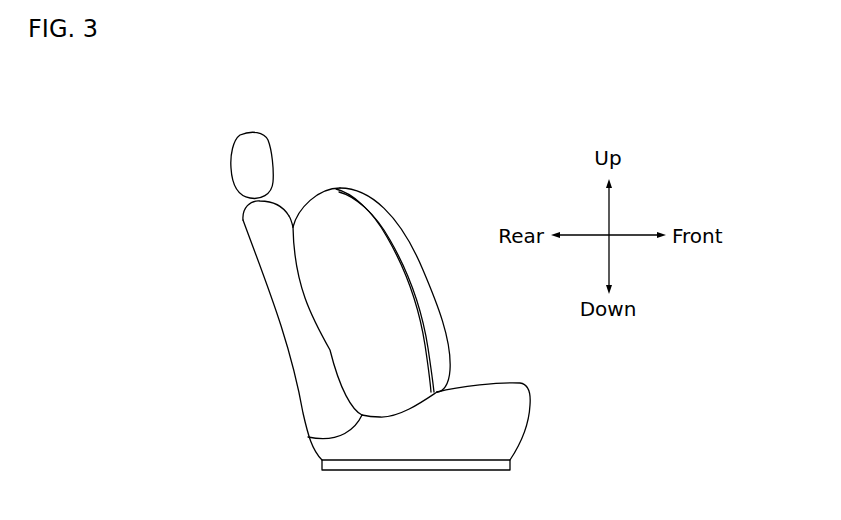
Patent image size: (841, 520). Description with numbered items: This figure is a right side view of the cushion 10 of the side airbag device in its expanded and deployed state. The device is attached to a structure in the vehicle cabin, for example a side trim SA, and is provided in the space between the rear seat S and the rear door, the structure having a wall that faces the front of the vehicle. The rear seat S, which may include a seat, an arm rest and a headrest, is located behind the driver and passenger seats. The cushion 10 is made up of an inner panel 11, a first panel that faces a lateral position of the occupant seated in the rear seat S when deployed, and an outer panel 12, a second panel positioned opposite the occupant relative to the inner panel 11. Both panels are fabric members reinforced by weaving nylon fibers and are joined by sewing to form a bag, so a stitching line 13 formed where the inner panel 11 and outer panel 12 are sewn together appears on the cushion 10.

The rear seat S is at (203, 138).
The side trim SA is at (253, 253).
The cushion 10 is at (367, 179).
The inner panel 11 is at (395, 218).
The outer panel 12 is at (330, 313).
The stitching line 13 is at (418, 296).